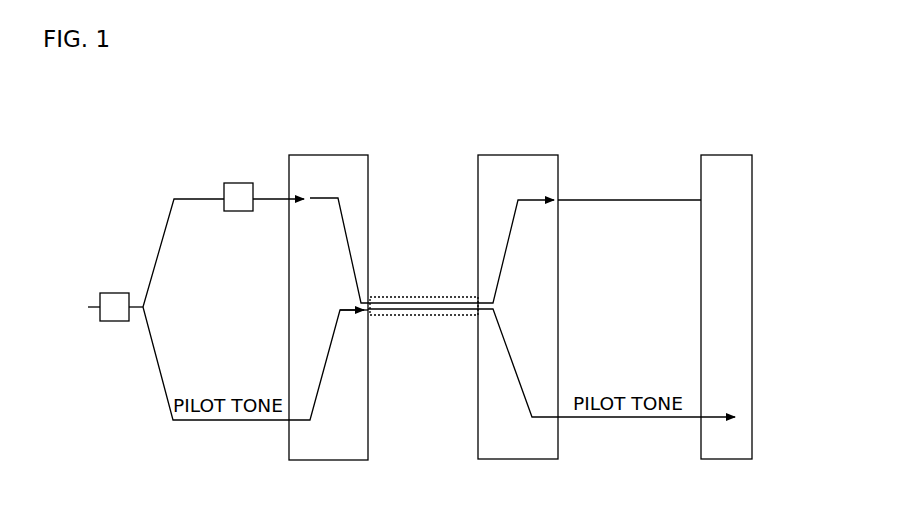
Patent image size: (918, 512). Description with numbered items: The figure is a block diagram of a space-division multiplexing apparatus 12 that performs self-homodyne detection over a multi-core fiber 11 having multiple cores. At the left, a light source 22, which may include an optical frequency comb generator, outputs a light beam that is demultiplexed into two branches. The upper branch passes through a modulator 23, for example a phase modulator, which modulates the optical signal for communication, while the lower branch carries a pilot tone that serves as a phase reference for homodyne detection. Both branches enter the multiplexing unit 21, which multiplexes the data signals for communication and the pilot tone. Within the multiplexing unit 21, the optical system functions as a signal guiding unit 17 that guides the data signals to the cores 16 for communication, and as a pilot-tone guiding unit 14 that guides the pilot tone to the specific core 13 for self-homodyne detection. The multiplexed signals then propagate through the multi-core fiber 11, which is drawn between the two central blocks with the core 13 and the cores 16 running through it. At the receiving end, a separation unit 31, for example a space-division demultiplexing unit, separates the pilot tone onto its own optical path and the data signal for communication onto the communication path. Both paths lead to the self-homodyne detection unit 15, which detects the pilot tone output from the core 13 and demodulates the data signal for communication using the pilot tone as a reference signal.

The multi-core fiber 11 is at (430, 296).
The space-division multiplexing apparatus 12 is at (432, 226).
The core for self-homodyne detection 13 is at (415, 312).
The pilot-tone guiding unit 14 is at (340, 309).
The self-homodyne detection unit 15 is at (737, 213).
The cores for communication 16 is at (397, 298).
The signal guiding unit 17 is at (335, 200).
The multiplexing unit 21 is at (360, 177).
The light source 22 is at (111, 293).
The modulator 23 is at (239, 183).
The separation unit 31 is at (518, 165).